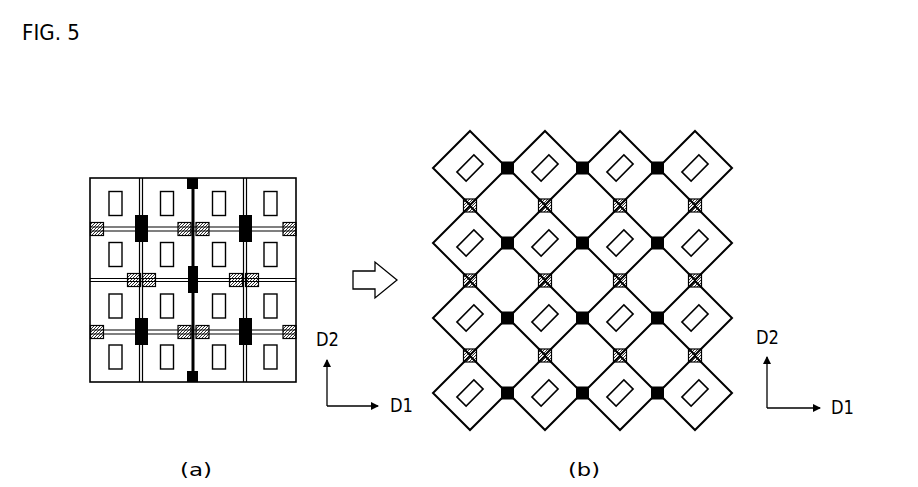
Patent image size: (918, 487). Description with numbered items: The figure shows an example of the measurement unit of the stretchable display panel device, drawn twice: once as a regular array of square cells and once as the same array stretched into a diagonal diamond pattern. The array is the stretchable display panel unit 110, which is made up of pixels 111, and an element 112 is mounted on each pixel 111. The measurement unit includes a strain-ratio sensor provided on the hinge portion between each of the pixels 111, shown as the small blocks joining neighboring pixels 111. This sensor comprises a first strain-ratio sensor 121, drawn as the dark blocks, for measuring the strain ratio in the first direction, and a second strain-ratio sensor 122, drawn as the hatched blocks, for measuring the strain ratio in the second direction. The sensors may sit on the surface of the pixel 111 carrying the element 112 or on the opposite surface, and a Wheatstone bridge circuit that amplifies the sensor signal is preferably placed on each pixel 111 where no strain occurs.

The stretchable display panel unit 110 is at (113, 174).
The pixel 111 is at (92, 210).
The element 112 is at (108, 197).
The first strain-ratio sensor 121 is at (193, 178).
The second strain-ratio sensor 122 is at (92, 330).